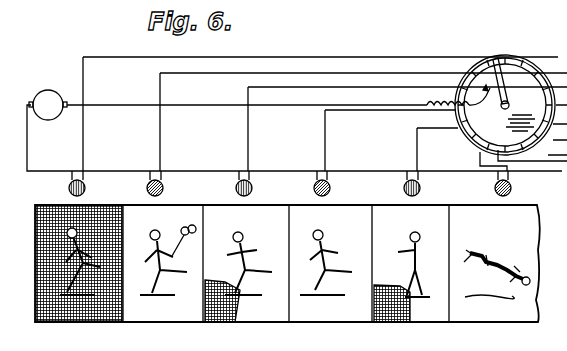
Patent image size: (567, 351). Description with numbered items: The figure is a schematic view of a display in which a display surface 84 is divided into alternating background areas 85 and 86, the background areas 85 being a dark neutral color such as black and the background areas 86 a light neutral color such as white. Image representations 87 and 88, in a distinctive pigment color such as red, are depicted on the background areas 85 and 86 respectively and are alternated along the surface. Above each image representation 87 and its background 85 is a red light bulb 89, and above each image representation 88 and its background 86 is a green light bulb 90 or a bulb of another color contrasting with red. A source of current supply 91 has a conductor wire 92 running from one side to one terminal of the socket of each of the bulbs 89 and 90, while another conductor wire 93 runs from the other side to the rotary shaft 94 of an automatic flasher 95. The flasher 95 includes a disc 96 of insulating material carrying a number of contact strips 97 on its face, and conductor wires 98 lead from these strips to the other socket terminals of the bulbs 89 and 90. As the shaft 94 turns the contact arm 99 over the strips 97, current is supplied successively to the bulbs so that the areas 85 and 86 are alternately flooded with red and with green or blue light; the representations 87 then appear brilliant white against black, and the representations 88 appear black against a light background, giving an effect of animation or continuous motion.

The display surface 84 is at (527, 219).
The background areas 85 is at (38, 257).
The background areas 86 is at (183, 217).
The image representations 87 is at (88, 235).
The image representations 88 is at (184, 240).
The red light bulb 89 is at (88, 183).
The green light bulb 90 is at (167, 181).
The source of current supply 91 is at (46, 90).
The conductor wire 92 is at (28, 143).
The conductor wire 93 is at (118, 106).
The rotary shaft 94 is at (509, 106).
The automatic flasher 95 is at (485, 82).
The disc 96 is at (510, 76).
The contact strips 97 is at (530, 66).
The conductor wires 98 is at (401, 72).
The contact arm 99 is at (510, 124).